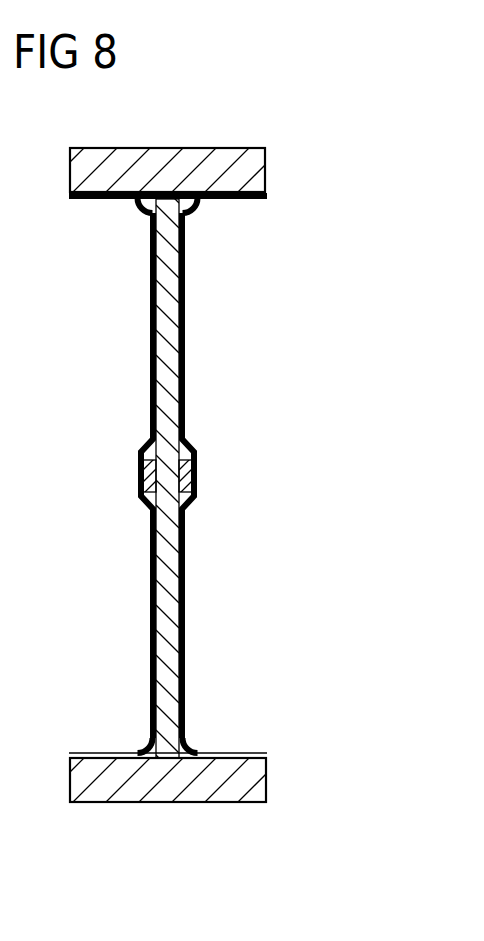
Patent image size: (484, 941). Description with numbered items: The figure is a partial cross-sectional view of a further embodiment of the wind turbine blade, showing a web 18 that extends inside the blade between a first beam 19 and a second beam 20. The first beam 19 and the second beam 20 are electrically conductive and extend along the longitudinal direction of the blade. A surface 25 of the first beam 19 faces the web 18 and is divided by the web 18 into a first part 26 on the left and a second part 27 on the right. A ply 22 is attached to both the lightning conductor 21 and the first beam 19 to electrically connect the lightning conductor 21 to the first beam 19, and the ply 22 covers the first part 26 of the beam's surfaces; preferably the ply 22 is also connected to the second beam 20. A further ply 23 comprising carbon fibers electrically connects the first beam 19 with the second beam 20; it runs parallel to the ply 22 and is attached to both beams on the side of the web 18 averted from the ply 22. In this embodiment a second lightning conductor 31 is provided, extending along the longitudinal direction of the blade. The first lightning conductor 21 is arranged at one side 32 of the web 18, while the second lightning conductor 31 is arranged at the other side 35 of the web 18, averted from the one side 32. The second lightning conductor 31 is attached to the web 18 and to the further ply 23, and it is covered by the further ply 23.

The web 18 is at (172, 413).
The first beam 19 is at (184, 160).
The second beam 20 is at (156, 792).
The lightning conductor 21 is at (146, 477).
The ply 22 is at (152, 347).
The further ply 23 is at (183, 347).
The surface 25 is at (242, 199).
The first part 26 is at (97, 207).
The second part 27 is at (222, 207).
The second lightning conductor 31 is at (187, 475).
The one side 32 is at (155, 610).
The other side 35 is at (182, 610).